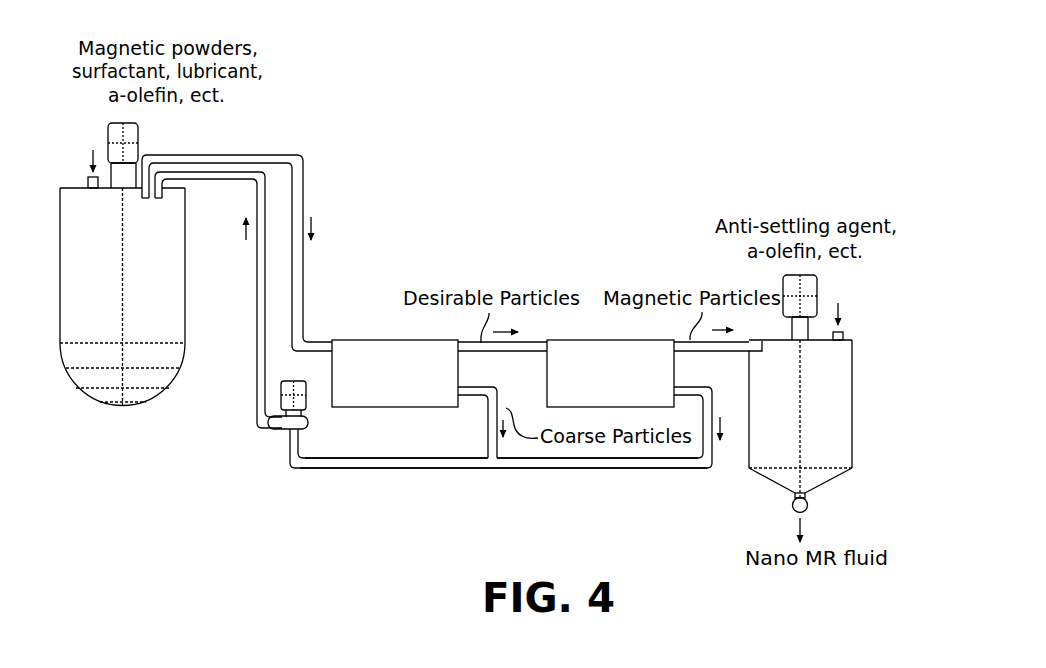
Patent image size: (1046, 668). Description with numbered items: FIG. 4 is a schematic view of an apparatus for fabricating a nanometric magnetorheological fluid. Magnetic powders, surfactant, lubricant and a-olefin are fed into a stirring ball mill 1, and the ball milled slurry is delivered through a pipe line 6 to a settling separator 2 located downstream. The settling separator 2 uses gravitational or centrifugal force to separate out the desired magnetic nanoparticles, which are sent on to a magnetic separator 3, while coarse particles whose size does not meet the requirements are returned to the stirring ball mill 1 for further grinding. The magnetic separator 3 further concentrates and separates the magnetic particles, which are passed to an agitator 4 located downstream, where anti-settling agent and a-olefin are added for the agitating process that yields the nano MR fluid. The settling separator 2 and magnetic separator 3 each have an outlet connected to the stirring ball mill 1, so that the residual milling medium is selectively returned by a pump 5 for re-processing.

The stirring ball mill 1 is at (87, 362).
The settling separator 2 is at (372, 352).
The magnetic separator 3 is at (583, 352).
The agitator 4 is at (845, 384).
The pump 5 is at (283, 398).
The pipe line 6 is at (503, 493).